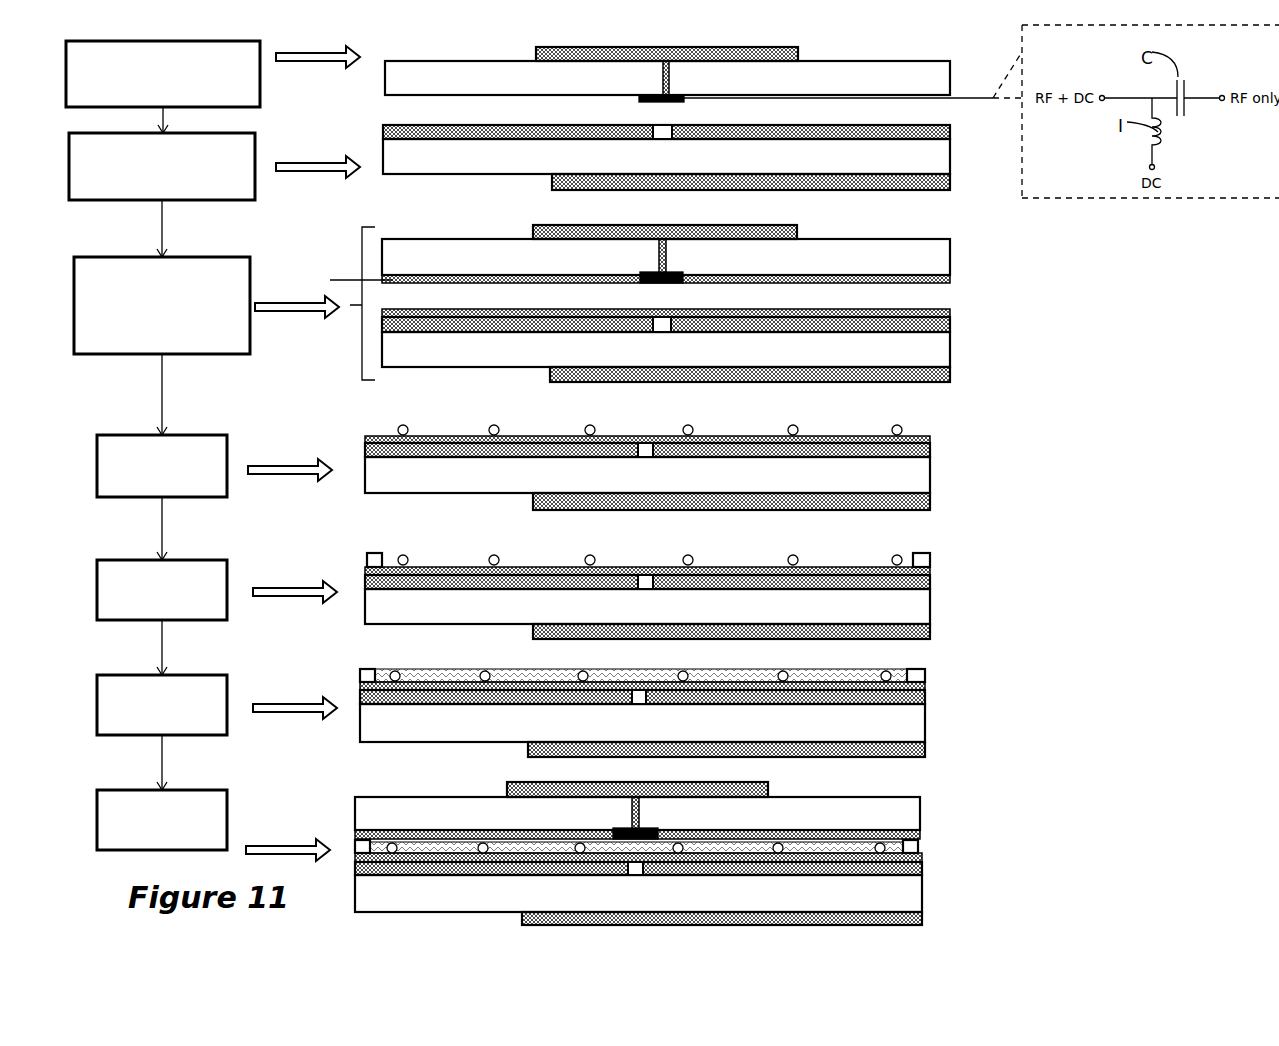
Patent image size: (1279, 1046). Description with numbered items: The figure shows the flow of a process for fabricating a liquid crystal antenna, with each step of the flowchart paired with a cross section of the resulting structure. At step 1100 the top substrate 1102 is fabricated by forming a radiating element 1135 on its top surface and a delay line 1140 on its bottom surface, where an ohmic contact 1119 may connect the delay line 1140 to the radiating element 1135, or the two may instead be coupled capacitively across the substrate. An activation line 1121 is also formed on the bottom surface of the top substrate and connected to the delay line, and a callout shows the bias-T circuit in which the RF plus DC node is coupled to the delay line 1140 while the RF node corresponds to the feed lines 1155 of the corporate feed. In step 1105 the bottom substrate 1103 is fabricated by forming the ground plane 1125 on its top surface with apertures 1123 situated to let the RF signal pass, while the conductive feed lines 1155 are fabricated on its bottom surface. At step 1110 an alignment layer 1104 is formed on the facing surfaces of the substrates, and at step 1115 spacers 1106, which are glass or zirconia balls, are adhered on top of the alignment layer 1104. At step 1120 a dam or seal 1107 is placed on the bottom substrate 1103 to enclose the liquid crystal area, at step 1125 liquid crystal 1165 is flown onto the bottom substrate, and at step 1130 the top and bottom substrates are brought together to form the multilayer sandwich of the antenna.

The top substrate fabrication step 1100 is at (163, 74).
The bottom substrate fabrication step 1105 is at (162, 166).
The alignment layer forming step 1110 is at (162, 305).
The spacer placing step 1115 is at (162, 466).
The dam placing step 1120 is at (162, 590).
The ground plane 1125 is at (812, 162).
The sandwich step 1130 is at (162, 820).
The top substrate 1102 is at (652, 445).
The bottom substrate 1103 is at (652, 525).
The ohmic contact 1119 is at (670, 64).
The activation line 1121 is at (368, 98).
The apertures 1123 is at (663, 140).
The radiating element 1135 is at (540, 48).
The delay line 1140 is at (640, 99).
The feed lines 1155 is at (935, 190).
The alignment layer 1104 is at (945, 308).
The spacers 1106 is at (797, 425).
The dam or seal 1107 is at (378, 553).
The liquid crystal 1165 is at (425, 672).